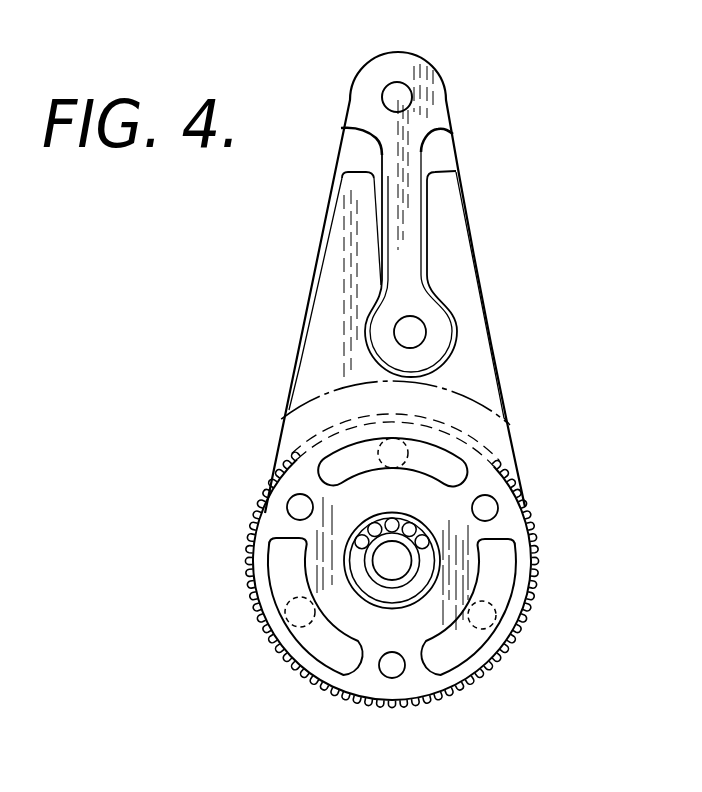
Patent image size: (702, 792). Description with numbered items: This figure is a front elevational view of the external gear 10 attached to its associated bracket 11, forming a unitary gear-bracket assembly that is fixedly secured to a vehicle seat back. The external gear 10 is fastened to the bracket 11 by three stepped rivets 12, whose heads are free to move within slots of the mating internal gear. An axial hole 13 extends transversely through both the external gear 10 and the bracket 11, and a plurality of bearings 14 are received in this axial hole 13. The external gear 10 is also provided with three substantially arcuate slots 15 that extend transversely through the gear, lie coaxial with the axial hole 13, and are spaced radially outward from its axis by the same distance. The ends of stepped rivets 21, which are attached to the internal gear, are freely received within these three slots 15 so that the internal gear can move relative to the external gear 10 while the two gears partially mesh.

The external gear 10 is at (252, 606).
The bracket 11 is at (314, 272).
The stepped rivets 12 is at (296, 506).
The axial hole 13 is at (346, 560).
The bearings 14 is at (428, 557).
The arcuate slots 15 is at (440, 452).
The stepped rivets 21 is at (380, 440).